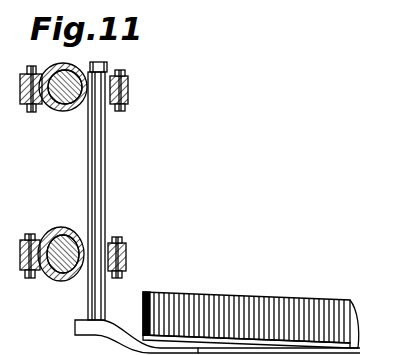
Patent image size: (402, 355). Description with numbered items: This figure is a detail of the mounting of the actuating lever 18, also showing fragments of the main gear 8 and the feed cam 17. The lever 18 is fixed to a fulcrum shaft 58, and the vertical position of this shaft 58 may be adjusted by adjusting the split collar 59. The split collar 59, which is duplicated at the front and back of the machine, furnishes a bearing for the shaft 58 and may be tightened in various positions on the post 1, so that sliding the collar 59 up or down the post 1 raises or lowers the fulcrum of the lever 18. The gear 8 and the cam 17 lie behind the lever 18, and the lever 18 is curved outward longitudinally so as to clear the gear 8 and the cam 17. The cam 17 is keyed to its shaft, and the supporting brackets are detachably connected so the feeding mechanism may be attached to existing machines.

The post 1 is at (34, 106).
The split collar 59 is at (63, 113).
The fulcrum shaft 58 is at (105, 177).
The gear 8 is at (183, 292).
The lever 18 is at (150, 338).
The cam 17 is at (350, 300).